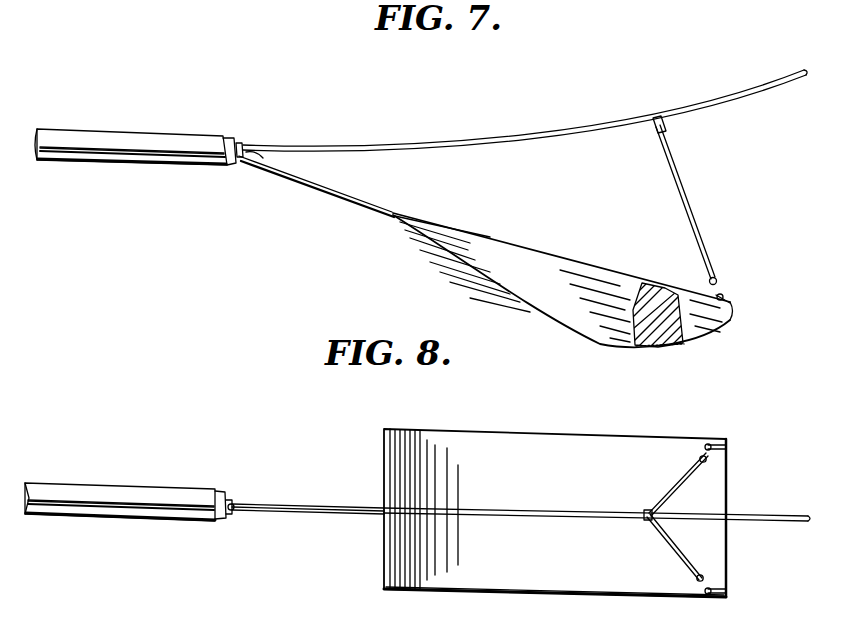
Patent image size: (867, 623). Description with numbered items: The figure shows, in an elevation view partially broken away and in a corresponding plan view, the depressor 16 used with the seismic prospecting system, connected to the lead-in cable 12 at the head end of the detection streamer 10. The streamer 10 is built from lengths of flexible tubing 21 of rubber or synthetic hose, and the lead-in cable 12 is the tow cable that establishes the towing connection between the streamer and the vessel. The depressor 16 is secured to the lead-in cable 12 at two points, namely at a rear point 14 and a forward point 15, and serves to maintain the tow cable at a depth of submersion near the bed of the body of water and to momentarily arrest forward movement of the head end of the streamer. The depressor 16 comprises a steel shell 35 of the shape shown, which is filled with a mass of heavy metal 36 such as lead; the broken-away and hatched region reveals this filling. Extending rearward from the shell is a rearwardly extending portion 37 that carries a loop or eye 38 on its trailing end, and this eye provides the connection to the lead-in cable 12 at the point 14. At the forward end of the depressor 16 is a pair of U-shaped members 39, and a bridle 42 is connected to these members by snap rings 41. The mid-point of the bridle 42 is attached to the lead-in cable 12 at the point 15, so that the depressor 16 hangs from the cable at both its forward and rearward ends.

In FIG. 7, the detection streamer 10 is at (108, 128).
In FIG. 8, the detection streamer 10 is at (122, 487).
In FIG. 7, the flexible tubing 21 is at (167, 160).
In FIG. 8, the flexible tubing 21 is at (149, 517).
In FIG. 7, the connection point 14 is at (245, 142).
In FIG. 8, the connection point 14 is at (239, 516).
In FIG. 7, the loop or eye 38 is at (262, 158).
In FIG. 8, the loop or eye 38 is at (233, 500).
In FIG. 7, the lead-in cable 12 is at (393, 149).
In FIG. 8, the lead-in cable 12 is at (765, 516).
In FIG. 7, the rearwardly extending portion 37 is at (316, 190).
In FIG. 8, the rearwardly extending portion 37 is at (278, 502).
In FIG. 7, the depressor 16 is at (600, 269).
In FIG. 8, the depressor 16 is at (582, 432).
In FIG. 7, the mass of heavy metal 36 is at (640, 348).
In FIG. 7, the steel shell 35 is at (655, 350).
In FIG. 8, the steel shell 35 is at (610, 596).
In FIG. 7, the connection point 15 is at (658, 122).
In FIG. 8, the connection point 15 is at (647, 512).
In FIG. 7, the bridle 42 is at (695, 207).
In FIG. 8, the bridle 42 is at (672, 546).
In FIG. 7, the snap rings 41 is at (718, 278).
In FIG. 8, the snap rings 41 is at (700, 458).
In FIG. 7, the U-shaped members 39 is at (728, 297).
In FIG. 8, the U-shaped members 39 is at (708, 444).